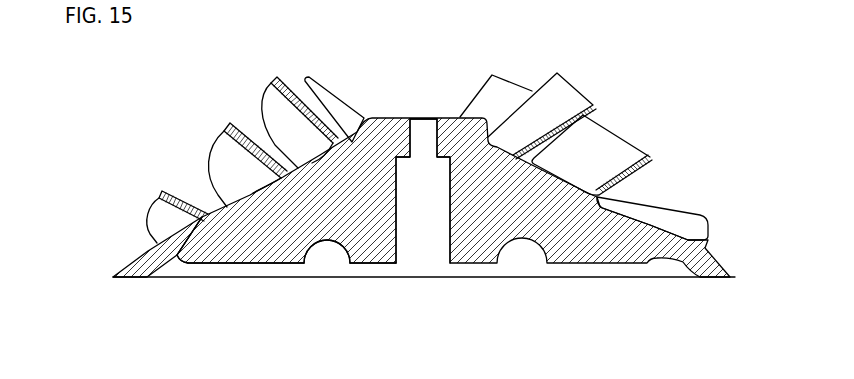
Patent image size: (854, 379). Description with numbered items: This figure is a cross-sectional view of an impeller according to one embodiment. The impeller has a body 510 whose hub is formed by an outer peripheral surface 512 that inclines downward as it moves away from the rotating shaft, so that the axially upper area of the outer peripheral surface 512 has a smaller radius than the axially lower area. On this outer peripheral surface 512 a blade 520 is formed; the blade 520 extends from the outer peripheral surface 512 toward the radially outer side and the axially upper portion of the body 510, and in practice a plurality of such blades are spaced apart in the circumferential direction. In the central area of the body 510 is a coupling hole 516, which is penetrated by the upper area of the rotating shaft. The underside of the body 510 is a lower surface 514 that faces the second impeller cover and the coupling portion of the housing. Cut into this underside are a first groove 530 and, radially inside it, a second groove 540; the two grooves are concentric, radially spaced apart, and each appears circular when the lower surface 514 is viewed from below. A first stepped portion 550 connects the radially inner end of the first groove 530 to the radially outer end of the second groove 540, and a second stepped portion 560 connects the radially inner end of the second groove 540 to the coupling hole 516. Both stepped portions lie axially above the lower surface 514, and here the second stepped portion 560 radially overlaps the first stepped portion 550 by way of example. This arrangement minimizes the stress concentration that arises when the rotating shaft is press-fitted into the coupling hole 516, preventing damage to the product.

The body 510 is at (168, 193).
The outer peripheral surface 512 is at (137, 253).
The lower surface 514 is at (125, 278).
The coupling hole 516 is at (433, 240).
The blade 520 is at (227, 150).
The first groove 530 is at (182, 258).
The second groove 540 is at (323, 242).
The first stepped portion 550 is at (245, 263).
The second stepped portion 560 is at (372, 263).